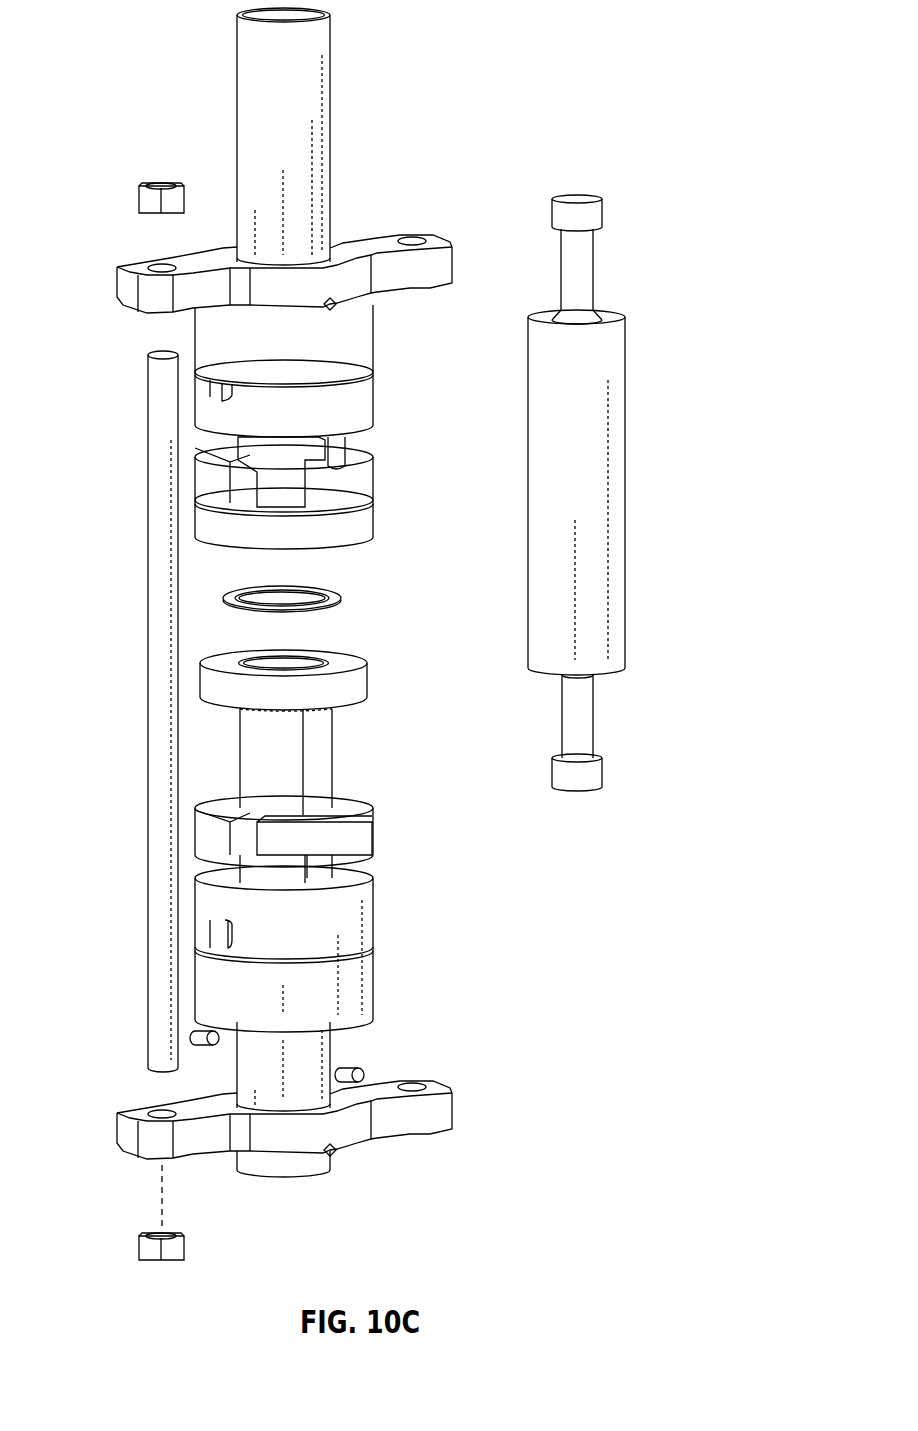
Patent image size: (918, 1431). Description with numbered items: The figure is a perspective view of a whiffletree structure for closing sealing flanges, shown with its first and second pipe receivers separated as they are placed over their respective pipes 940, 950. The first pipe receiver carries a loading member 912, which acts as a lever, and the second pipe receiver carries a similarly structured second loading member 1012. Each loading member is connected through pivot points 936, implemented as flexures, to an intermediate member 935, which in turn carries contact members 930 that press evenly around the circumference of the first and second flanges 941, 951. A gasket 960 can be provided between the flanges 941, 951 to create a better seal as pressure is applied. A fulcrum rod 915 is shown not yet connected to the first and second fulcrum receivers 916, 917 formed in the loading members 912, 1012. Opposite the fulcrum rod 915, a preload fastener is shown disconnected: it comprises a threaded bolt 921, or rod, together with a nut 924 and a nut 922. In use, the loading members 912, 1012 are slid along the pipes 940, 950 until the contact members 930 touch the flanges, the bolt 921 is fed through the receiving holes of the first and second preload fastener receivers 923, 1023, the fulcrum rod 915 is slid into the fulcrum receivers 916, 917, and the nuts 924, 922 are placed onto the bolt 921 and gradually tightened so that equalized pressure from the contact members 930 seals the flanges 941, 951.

The pipe 940 is at (348, 96).
The nut 924 is at (132, 198).
The first fulcrum receiver 916 is at (269, 231).
The loading member 912 is at (262, 246).
The first preload fastener receiver 923 is at (158, 264).
The intermediate member 935 is at (356, 403).
The pivot point 936 is at (340, 448).
The contact members 930 is at (356, 486).
The first flange 941 is at (356, 518).
The gasket 960 is at (342, 599).
The second flange 951 is at (354, 684).
The fulcrum rod 915 is at (602, 457).
The bolt 921 is at (148, 938).
The second fulcrum receiver 917 is at (422, 1086).
The second preload fastener receiver 1023 is at (158, 1112).
The second loading member 1012 is at (280, 1117).
The pipe 950 is at (281, 1174).
The nut 922 is at (139, 1250).